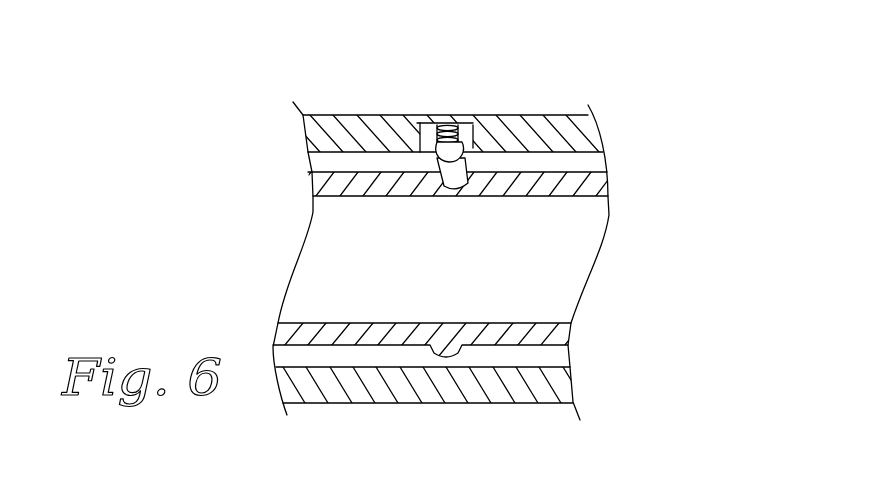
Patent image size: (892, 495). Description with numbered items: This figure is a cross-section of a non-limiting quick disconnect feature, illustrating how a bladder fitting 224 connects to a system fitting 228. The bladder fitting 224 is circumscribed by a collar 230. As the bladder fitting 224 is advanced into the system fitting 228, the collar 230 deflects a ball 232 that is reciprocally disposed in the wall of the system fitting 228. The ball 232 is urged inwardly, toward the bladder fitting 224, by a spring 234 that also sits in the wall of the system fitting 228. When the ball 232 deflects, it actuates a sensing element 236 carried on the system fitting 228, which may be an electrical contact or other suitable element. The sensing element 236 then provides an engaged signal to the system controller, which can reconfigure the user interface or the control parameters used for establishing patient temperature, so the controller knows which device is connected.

The bladder fitting 224 is at (604, 196).
The system fitting 228 is at (565, 135).
The collar 230 is at (432, 353).
The ball 232 is at (462, 151).
The spring 234 is at (445, 118).
The sensing element 236 is at (470, 117).